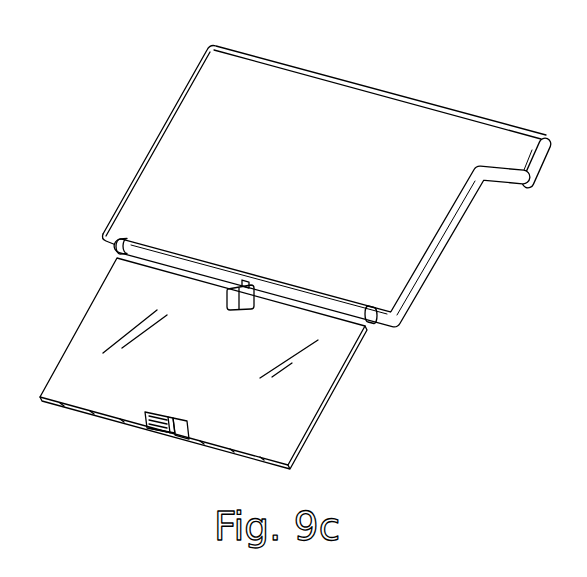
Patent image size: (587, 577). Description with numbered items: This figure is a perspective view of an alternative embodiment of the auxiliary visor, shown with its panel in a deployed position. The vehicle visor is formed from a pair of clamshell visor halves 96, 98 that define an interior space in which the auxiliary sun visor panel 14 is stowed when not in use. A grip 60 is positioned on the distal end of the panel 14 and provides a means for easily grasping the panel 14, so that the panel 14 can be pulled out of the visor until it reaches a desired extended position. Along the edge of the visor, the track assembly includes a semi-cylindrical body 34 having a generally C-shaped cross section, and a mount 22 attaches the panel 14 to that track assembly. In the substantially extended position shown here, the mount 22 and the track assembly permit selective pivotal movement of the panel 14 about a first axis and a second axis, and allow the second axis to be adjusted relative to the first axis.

The auxiliary sun visor panel 14 is at (307, 397).
The mount 22 is at (233, 295).
The semi-cylindrical body 34 is at (147, 246).
The grip 60 is at (150, 428).
The clamshell visor half 96 is at (493, 140).
The clamshell visor half 98 is at (447, 245).